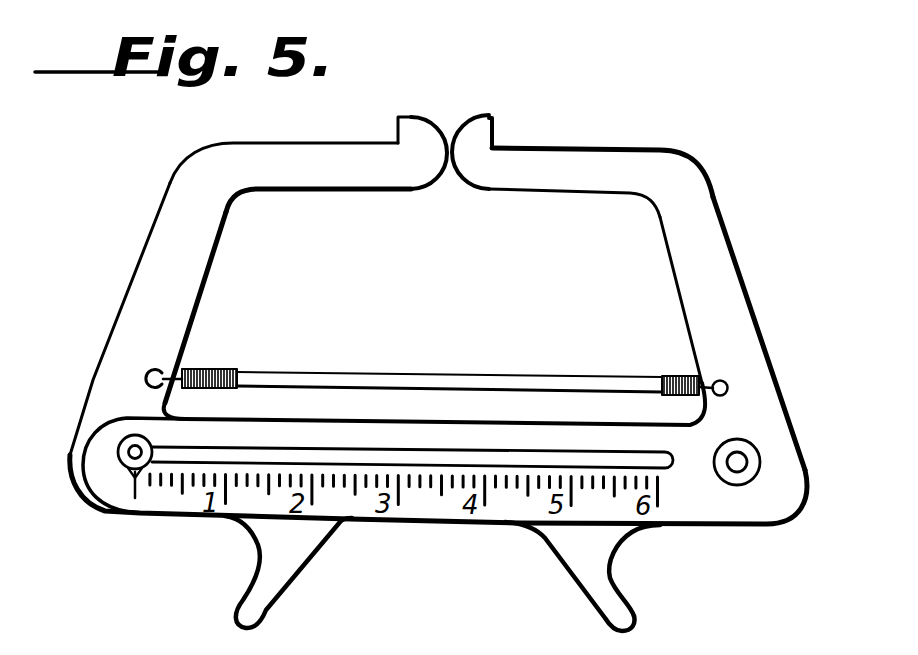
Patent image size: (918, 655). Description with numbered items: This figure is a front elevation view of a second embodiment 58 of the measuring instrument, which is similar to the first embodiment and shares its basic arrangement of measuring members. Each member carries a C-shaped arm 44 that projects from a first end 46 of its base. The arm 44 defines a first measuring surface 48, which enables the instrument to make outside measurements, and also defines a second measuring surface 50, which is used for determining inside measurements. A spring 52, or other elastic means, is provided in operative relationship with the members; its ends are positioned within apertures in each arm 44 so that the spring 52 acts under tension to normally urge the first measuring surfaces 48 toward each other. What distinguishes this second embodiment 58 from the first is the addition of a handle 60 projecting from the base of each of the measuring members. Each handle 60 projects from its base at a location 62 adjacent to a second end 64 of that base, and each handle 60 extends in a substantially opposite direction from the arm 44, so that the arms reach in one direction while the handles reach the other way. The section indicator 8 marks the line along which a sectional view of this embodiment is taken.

The section line 8- 8 is at (482, 299).
The C-shaped arm 44 is at (196, 264).
The first end 46 is at (778, 507).
The first measuring surface 48 is at (444, 176).
The second measuring surface 50 is at (398, 128).
The spring 52 is at (404, 356).
The second embodiment 58 is at (784, 172).
The handle 60 is at (272, 583).
The location 62 is at (624, 545).
The second end 64 is at (103, 477).